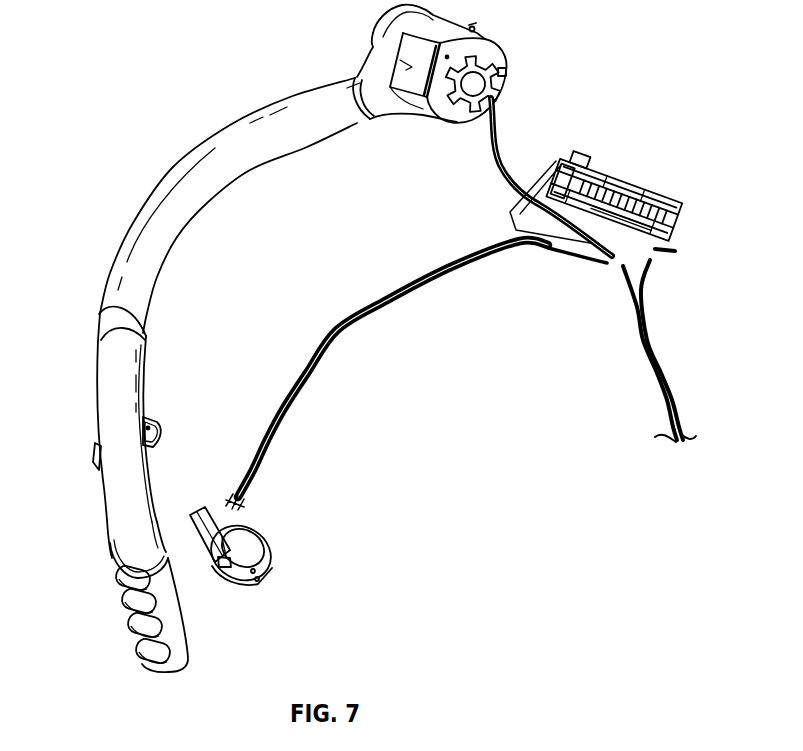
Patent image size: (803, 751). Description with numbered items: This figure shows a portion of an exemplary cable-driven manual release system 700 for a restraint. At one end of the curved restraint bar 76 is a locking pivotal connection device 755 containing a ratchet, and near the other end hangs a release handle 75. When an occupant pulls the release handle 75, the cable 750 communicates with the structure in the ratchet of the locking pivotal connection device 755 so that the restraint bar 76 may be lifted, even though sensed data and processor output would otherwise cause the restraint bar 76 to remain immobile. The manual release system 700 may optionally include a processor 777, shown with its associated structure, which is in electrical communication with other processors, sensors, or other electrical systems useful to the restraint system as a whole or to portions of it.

The manual release system 700 is at (116, 30).
The restraint bar 76 is at (206, 143).
The locking pivotal connection device 755 is at (505, 95).
The processor 777 is at (647, 181).
The cable 750 is at (362, 319).
The release handle 75 is at (198, 511).